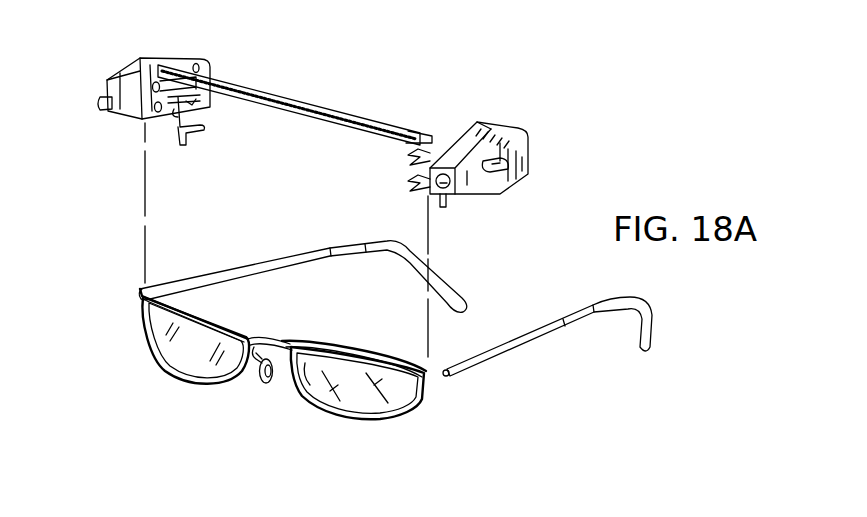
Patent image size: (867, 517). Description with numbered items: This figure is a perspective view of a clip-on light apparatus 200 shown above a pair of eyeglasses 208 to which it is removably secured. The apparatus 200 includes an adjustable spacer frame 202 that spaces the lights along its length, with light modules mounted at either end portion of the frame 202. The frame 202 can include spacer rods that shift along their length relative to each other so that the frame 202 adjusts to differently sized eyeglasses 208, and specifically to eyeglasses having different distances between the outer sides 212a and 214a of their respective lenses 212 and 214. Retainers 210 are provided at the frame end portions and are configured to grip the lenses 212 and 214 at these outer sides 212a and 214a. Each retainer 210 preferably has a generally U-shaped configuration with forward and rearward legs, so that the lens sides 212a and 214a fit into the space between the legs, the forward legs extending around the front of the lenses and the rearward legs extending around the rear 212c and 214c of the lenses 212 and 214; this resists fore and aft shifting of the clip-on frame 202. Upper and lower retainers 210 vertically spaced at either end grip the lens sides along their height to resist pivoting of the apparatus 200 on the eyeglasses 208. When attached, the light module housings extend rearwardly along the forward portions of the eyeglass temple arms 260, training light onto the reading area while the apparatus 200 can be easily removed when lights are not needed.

The clip-on light apparatus 200 is at (316, 187).
The frame 202 is at (354, 98).
The eyeglasses 208 is at (346, 363).
The retainers 210 is at (196, 144).
The lens 212 is at (182, 367).
The outer side of lens 212a is at (118, 336).
The rear of lens 212c is at (217, 313).
The lens 214 is at (396, 392).
The outer side of lens 214a is at (424, 402).
The rear of lens 214c is at (402, 315).
The eyeglass temple arms 260 is at (230, 272).